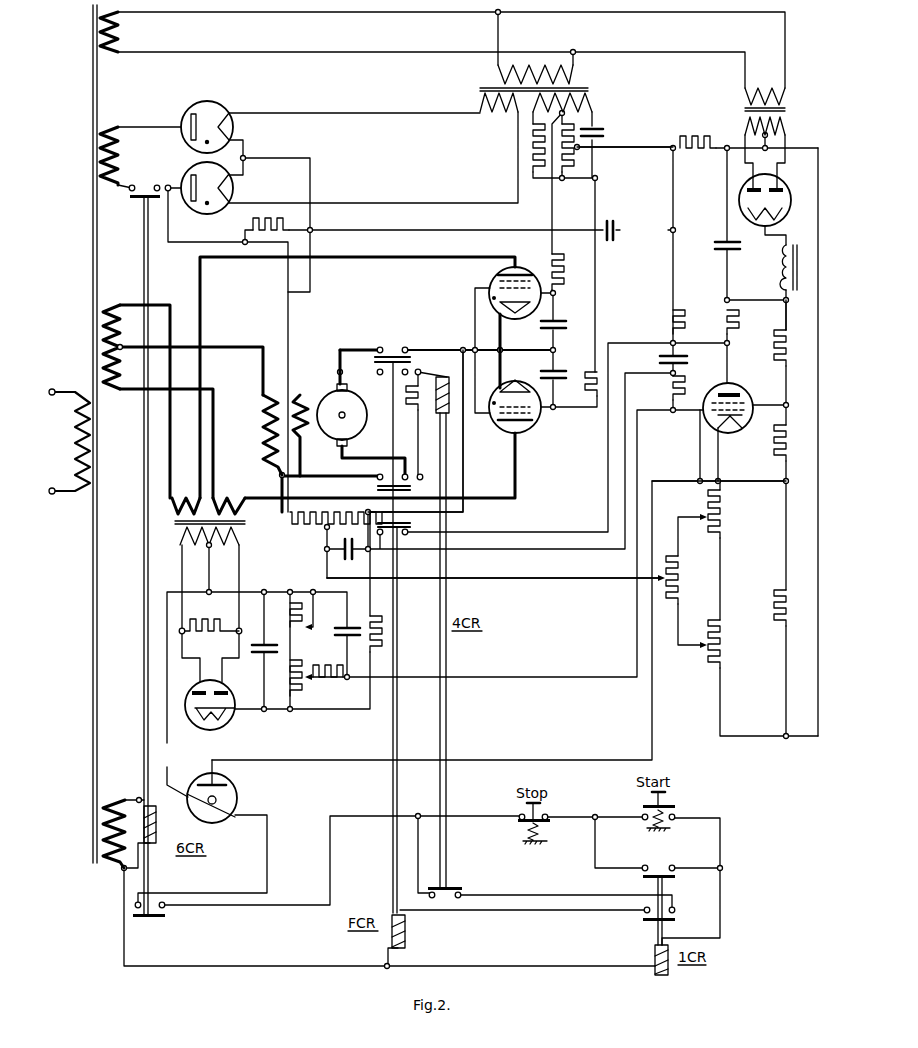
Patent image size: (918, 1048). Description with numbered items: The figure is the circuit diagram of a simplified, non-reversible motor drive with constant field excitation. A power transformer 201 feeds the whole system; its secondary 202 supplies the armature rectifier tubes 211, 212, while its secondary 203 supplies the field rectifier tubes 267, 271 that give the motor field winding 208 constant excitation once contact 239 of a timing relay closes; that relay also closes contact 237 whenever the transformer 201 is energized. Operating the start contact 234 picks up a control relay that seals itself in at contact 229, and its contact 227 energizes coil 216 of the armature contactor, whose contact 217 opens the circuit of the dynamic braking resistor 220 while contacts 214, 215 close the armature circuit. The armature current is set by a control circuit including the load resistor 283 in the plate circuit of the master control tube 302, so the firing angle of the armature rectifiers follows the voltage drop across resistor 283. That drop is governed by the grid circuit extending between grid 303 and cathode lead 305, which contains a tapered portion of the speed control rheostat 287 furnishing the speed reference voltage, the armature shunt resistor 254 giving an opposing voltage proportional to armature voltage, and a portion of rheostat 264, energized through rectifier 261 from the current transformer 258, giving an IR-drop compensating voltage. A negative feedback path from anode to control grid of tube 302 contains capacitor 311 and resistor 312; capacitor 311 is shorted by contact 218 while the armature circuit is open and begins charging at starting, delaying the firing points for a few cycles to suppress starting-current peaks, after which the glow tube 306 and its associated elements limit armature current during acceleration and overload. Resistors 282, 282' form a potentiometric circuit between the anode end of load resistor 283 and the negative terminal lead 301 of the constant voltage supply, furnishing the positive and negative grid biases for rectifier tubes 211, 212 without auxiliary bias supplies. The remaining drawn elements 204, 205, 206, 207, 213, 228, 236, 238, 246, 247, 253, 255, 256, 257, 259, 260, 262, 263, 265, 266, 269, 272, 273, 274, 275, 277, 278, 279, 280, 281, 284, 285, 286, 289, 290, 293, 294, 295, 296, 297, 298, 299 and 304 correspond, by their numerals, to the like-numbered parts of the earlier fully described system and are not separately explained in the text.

The power transformer 201 is at (93, 524).
The secondary 202 is at (120, 316).
The secondary 203 is at (118, 141).
The secondary winding 204 is at (118, 26).
The secondary winding 205 is at (122, 806).
The motor 206 is at (362, 400).
The field winding 207 is at (266, 422).
The motor field winding 208 is at (303, 438).
The rectifier tube 211 is at (490, 280).
The rectifier tube 212 is at (532, 424).
The conductor 213 is at (500, 340).
The contact 214 is at (388, 352).
The contact 215 is at (384, 476).
The coil of armature contactor FCR 216 is at (406, 932).
The contact 217 is at (408, 372).
The contact 218 is at (400, 533).
The dynamic braking resistor 220 is at (406, 400).
The contact 227 is at (642, 920).
The relay coil 1CR 228 is at (654, 952).
The contact 229 is at (670, 880).
The start contact 234 is at (675, 804).
The stop switch 236 is at (520, 826).
The contact 237 is at (166, 918).
The relay coil 6CR 238 is at (157, 830).
The contact 239 is at (138, 199).
The relay contacts 246 is at (458, 888).
The relay coil 4CR 247 is at (450, 400).
The resistor 253 is at (312, 526).
The armature shunt resistor 254 is at (376, 490).
The capacitor 255 is at (340, 558).
The primary winding 256 is at (190, 510).
The primary winding 257 is at (228, 508).
The current transformer 258 is at (175, 522).
The secondary winding 259 is at (239, 545).
The capacitor 260 is at (262, 656).
The rectifier 261 is at (233, 718).
The resistor 262 is at (209, 618).
The resistor 263 is at (302, 634).
The rheostat 264 is at (302, 690).
The resistor 265 is at (334, 680).
The capacitor 266 is at (338, 628).
The rectifier tube 267 is at (207, 103).
The resistor 269 is at (270, 216).
The rectifier tube 271 is at (186, 170).
The secondary winding 272 is at (496, 112).
The transformer 273 is at (484, 86).
The secondary winding 274 is at (592, 104).
The conductor 275 is at (633, 165).
The capacitor 277 is at (545, 304).
The resistor 278 is at (567, 253).
The resistor 279 is at (547, 412).
The capacitor 280 is at (576, 370).
The conductor 281 is at (642, 150).
The resistor 282 is at (655, 322).
The resistor 282' is at (698, 154).
The load resistor 283 is at (727, 318).
The resistor 284 is at (773, 350).
The resistor 285 is at (773, 452).
The potentiometer 286 is at (720, 512).
The speed control rheostat 287 is at (678, 568).
The conductor 289 is at (560, 578).
The conductor 290 is at (466, 514).
The transformer 293 is at (785, 110).
The rectifier tube 294 is at (782, 186).
The choke coil 295 is at (780, 268).
The capacitor 296 is at (716, 246).
The conductor 297 is at (786, 318).
The potentiometer 298 is at (722, 660).
The resistor 299 is at (774, 602).
The negative terminal lead 301 is at (793, 152).
The master control tube 302 is at (740, 390).
The grid 303 is at (748, 424).
The resistor 304 is at (388, 634).
The cathode lead 305 is at (724, 478).
The glow tube 306 is at (237, 795).
The capacitor 311 is at (658, 358).
The resistor 312 is at (686, 388).